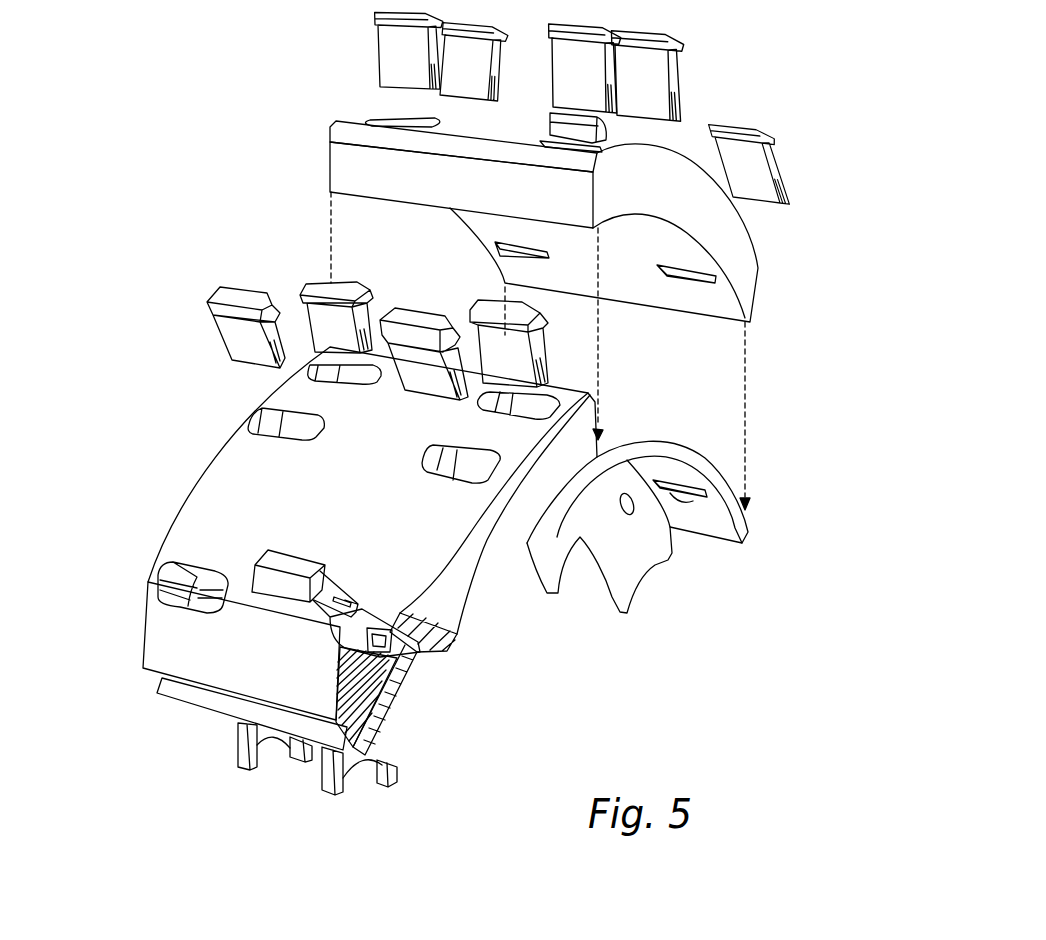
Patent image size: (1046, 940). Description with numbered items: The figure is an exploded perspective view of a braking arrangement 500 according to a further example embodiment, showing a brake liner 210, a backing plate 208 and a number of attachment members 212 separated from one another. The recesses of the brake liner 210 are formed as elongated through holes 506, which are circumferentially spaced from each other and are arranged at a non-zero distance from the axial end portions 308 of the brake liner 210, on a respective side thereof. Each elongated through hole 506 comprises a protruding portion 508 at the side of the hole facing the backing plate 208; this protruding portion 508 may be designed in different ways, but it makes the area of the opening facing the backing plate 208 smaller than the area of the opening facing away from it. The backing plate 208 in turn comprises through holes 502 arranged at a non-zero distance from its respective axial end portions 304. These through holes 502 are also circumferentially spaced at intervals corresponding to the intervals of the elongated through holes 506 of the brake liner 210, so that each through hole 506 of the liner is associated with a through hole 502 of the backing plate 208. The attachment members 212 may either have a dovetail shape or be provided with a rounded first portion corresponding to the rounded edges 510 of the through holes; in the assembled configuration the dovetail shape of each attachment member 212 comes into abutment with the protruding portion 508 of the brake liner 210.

The braking arrangement 500 is at (213, 140).
The attachment member 212 is at (395, 51).
The axial end portions of the brake liner 308 is at (330, 161).
The brake liner 210 is at (733, 243).
The backing plate 208 is at (742, 525).
The elongated through holes 506 is at (272, 428).
The through holes of the backing plate 502 is at (670, 490).
The rounded edges of the through holes 510 is at (638, 580).
The axial end portions of the backing plate 304 is at (497, 570).
The protruding portion 508 is at (410, 642).